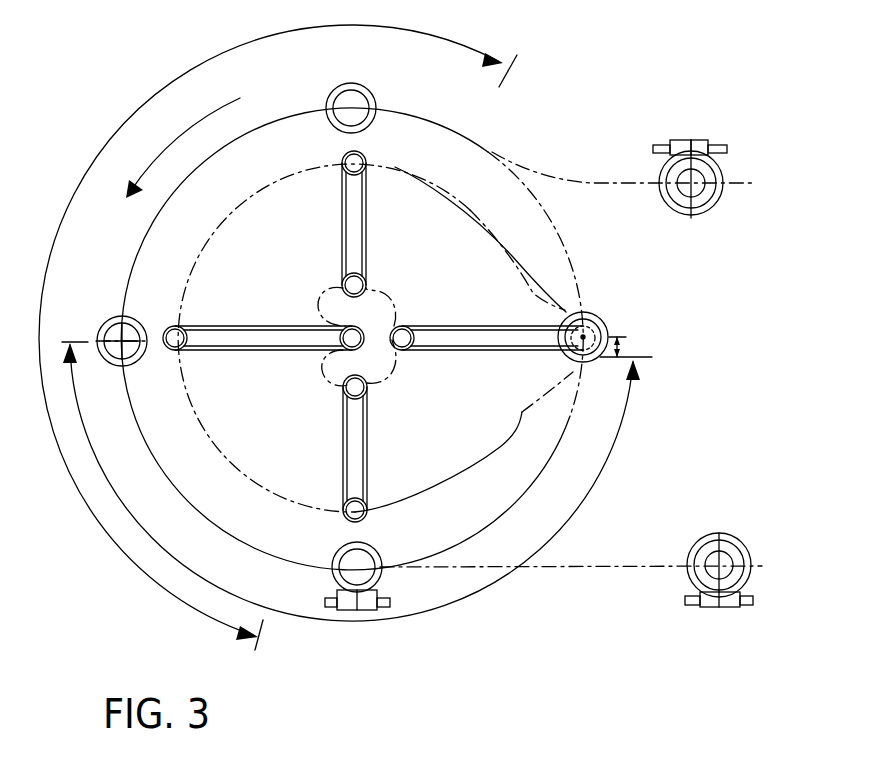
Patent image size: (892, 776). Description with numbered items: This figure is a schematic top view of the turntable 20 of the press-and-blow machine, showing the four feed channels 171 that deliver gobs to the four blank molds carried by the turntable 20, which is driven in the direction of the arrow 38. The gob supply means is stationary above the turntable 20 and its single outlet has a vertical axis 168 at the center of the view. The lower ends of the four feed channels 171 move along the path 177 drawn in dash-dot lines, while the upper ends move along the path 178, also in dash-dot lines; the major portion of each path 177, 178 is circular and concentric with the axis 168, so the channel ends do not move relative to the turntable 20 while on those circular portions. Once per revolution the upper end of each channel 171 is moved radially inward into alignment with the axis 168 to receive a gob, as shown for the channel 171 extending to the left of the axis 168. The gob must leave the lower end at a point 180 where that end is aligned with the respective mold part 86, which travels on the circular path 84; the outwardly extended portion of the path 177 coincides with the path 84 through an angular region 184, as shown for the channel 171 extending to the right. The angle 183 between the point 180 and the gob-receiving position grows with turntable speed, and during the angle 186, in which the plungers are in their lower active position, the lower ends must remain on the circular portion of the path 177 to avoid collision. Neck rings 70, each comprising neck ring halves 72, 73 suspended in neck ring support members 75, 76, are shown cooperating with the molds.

The turntable 20 is at (92, 130).
The arrow 38 is at (167, 147).
The neck ring 70 is at (538, 382).
The neck ring half 72 is at (704, 199).
The neck ring half 73 is at (678, 202).
The neck ring support member 75 is at (699, 149).
The neck ring support member 76 is at (680, 148).
The circular path 84 is at (162, 472).
The mold part 86 is at (366, 93).
The vertical axis 168 is at (377, 305).
The feed channel 171 is at (340, 218).
The path 177 is at (510, 245).
The path 178 is at (393, 371).
The point 180 is at (578, 348).
The angle 183 is at (490, 585).
The angular region 184 is at (627, 352).
The angle 186 is at (72, 193).